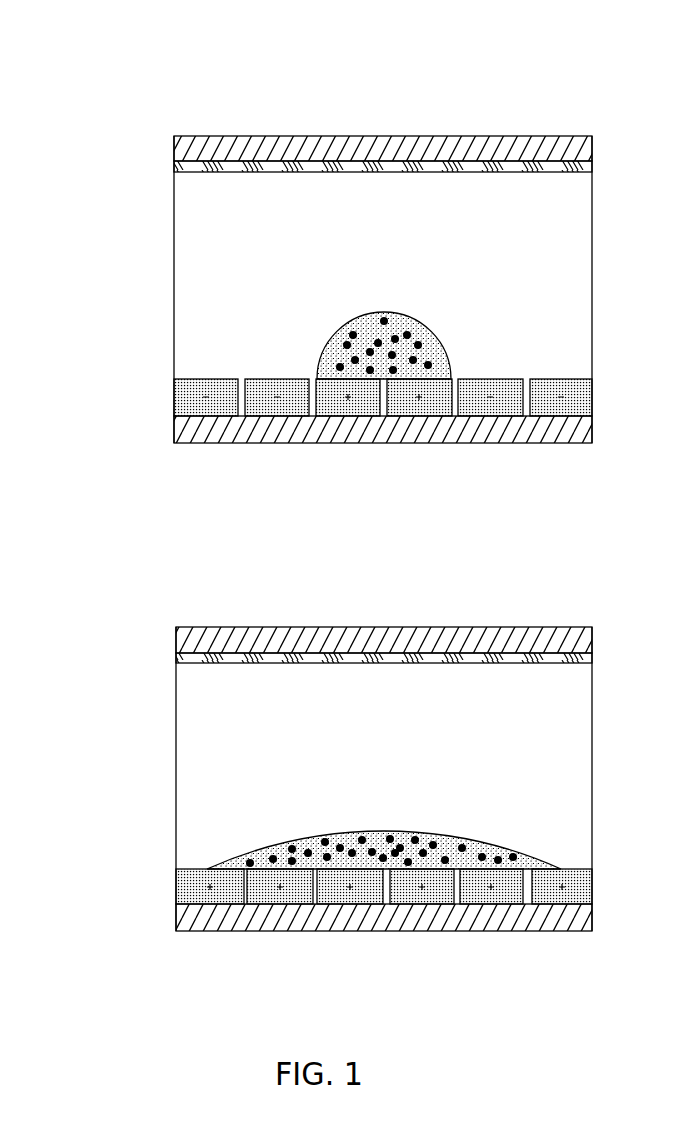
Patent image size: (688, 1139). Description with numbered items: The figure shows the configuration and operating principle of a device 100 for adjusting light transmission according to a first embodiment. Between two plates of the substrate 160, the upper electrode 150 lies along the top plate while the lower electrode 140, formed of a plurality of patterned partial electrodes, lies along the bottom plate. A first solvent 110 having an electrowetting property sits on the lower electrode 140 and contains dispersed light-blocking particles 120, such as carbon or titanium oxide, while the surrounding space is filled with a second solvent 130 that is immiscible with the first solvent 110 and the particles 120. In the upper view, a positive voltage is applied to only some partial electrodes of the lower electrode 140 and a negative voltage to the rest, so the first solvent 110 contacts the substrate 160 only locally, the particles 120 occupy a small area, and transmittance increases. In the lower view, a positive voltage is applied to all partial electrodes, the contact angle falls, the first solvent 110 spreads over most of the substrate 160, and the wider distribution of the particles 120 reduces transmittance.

The device for adjusting light transmission 100 is at (117, 33).
The first solvent 110 is at (338, 332).
The particles 120 is at (317, 365).
The second solvent 130 is at (215, 232).
The lower electrode 140 is at (183, 397).
The upper electrode 150 is at (183, 168).
The substrate 160 is at (183, 150).